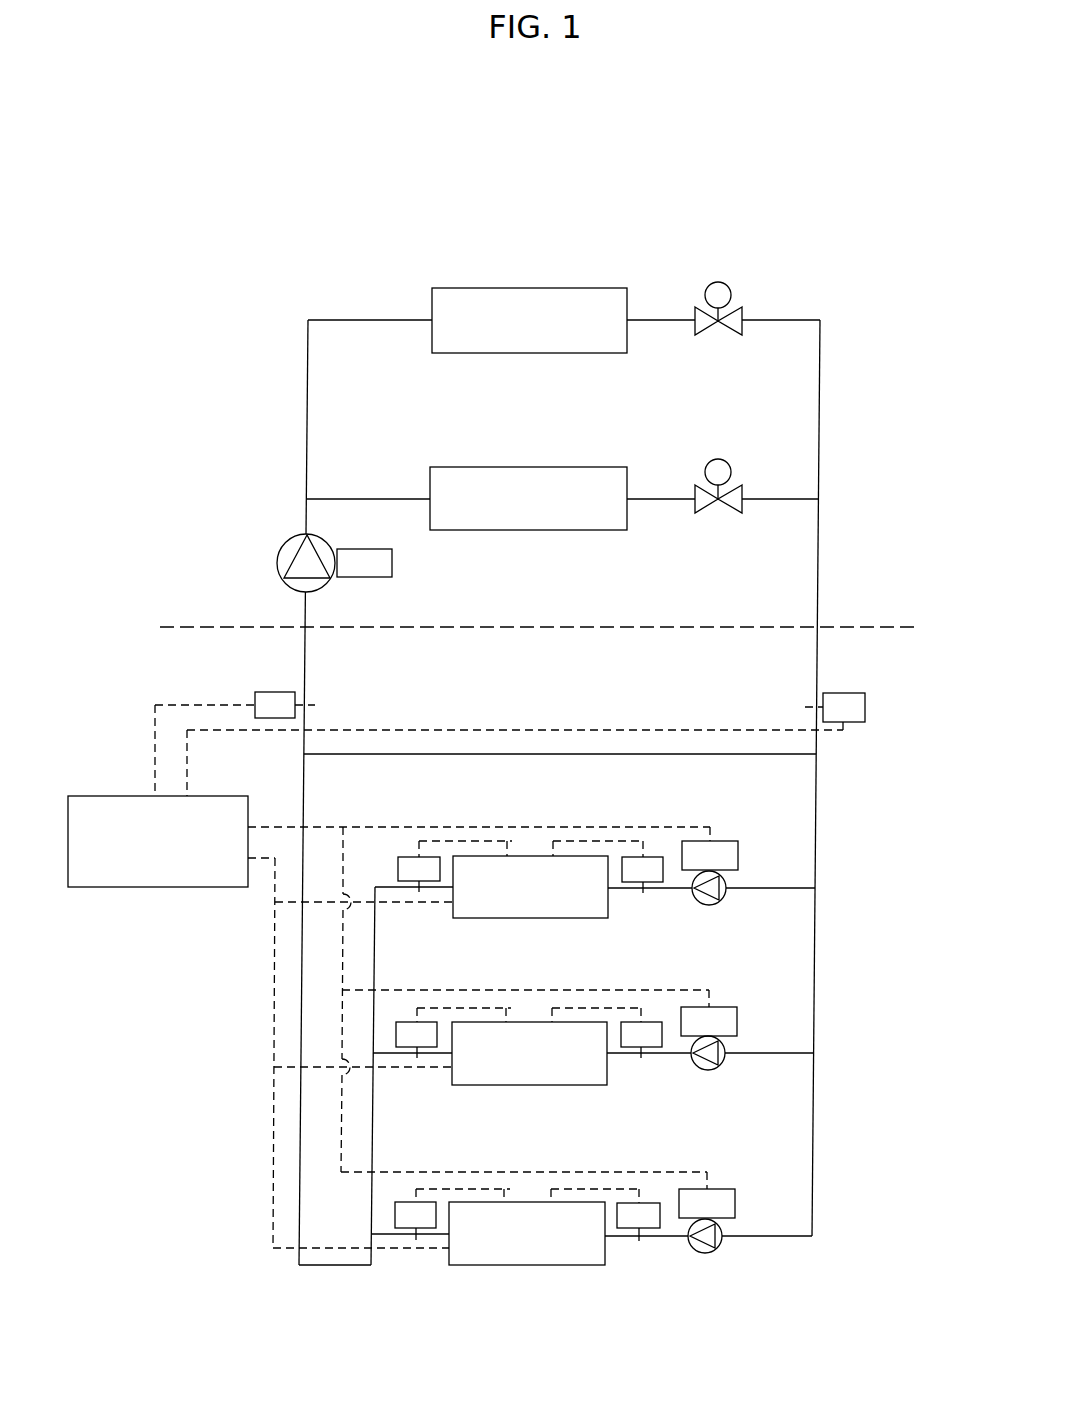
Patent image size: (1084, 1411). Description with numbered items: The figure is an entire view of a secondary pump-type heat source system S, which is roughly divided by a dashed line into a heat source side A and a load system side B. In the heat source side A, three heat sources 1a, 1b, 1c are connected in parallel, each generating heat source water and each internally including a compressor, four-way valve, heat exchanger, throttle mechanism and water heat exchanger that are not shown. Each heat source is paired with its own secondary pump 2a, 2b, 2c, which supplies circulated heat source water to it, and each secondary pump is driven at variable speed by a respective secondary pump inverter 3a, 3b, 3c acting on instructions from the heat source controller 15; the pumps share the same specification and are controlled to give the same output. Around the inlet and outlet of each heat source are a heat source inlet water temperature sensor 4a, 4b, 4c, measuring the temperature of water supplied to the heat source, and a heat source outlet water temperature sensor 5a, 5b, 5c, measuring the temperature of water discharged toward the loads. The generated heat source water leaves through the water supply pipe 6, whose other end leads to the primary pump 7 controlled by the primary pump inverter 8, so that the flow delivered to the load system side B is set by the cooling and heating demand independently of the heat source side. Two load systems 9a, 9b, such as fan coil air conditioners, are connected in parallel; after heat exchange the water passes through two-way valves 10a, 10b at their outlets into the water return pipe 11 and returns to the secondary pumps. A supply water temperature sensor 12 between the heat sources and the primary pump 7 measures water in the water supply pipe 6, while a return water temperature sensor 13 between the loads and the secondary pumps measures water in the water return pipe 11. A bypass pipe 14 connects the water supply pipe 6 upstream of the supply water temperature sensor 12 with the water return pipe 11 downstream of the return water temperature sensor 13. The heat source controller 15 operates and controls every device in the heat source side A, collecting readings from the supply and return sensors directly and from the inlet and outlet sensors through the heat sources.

The secondary pump-type heat source system S is at (652, 178).
The heat source side A is at (826, 930).
The load system side B is at (828, 407).
The heat source 1a is at (535, 856).
The heat source 1b is at (533, 1022).
The heat source 1c is at (532, 1202).
The secondary pump 2a is at (722, 897).
The secondary pump 2b is at (721, 1062).
The secondary pump 2c is at (718, 1245).
The secondary pump inverter 3a is at (721, 841).
The secondary pump inverter 3b is at (720, 1007).
The secondary pump inverter 3c is at (719, 1189).
The heat source inlet water temperature sensor 4a is at (650, 857).
The heat source inlet water temperature sensor 4b is at (649, 1022).
The heat source inlet water temperature sensor 4c is at (646, 1203).
The heat source outlet water temperature sensor 5a is at (414, 857).
The heat source outlet water temperature sensor 5b is at (413, 1022).
The heat source outlet water temperature sensor 5c is at (411, 1202).
The water supply pipe 6 is at (307, 432).
The primary pump 7 is at (277, 564).
The primary pump inverter 8 is at (392, 561).
The load system 9a is at (543, 288).
The load system 9b is at (542, 467).
The two-way valve 10a is at (718, 282).
The two-way valve 10b is at (718, 459).
The water return pipe 11 is at (818, 549).
The supply water temperature sensor 12 is at (275, 692).
The return water temperature sensor 13 is at (865, 706).
The bypass pipe 14 is at (592, 754).
The heat source controller 15 is at (158, 887).